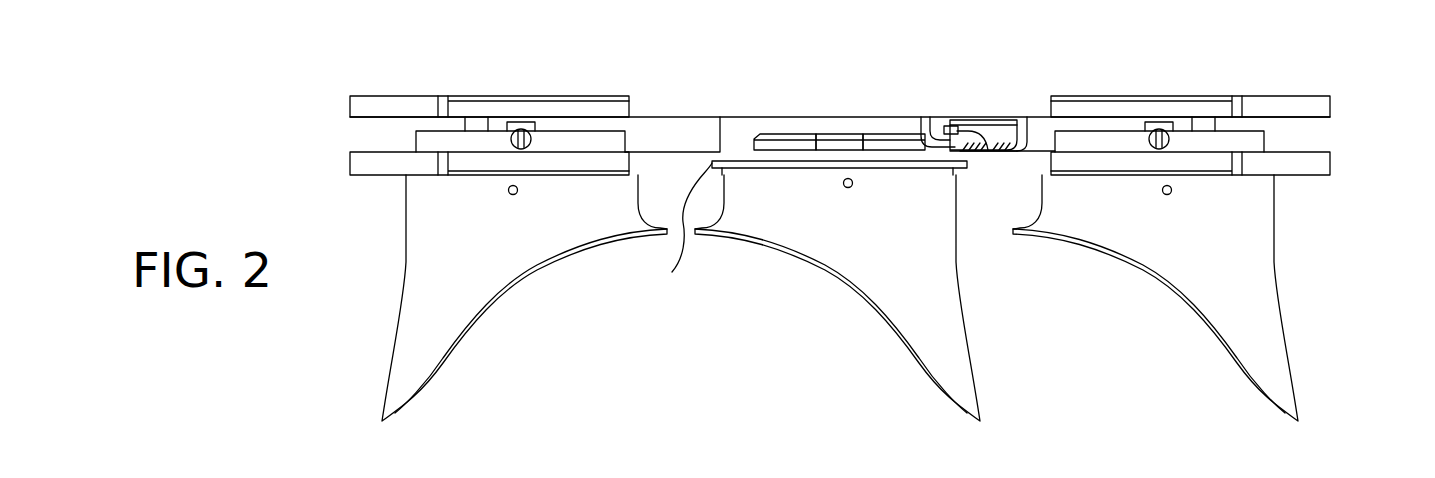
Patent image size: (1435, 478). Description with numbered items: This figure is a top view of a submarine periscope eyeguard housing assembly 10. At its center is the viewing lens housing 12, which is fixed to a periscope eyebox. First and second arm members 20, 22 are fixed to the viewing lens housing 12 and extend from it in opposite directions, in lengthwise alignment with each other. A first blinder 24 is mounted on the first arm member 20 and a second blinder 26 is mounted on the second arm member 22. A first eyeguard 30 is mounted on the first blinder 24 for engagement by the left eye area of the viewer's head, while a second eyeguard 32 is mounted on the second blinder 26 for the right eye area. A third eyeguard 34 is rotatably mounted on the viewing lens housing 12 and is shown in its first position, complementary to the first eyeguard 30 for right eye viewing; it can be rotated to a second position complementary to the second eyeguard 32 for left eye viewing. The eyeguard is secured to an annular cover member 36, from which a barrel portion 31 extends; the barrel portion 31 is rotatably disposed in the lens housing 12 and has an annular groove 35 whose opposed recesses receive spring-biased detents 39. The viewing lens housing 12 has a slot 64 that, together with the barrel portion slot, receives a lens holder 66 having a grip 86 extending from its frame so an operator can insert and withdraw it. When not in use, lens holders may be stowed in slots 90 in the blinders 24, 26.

The submarine periscope eyeguard housing assembly 10 is at (501, 59).
The viewing lens housing 12 is at (863, 117).
The first arm member 20 is at (679, 126).
The second arm member 22 is at (1033, 117).
The first blinder 24 is at (360, 350).
The second blinder 26 is at (1302, 230).
The first eyeguard 30 is at (442, 367).
The barrel portion 31 is at (945, 120).
The second eyeguard 32 is at (1272, 316).
The third eyeguard 34 is at (912, 348).
The annular groove 35 is at (930, 120).
The annular cover member 36 is at (679, 230).
The spring-biased detents 39 is at (990, 152).
The slot 64 is at (767, 134).
The lens holder 66 is at (902, 138).
The grip 86 is at (832, 138).
The slots 90 is at (336, 137).